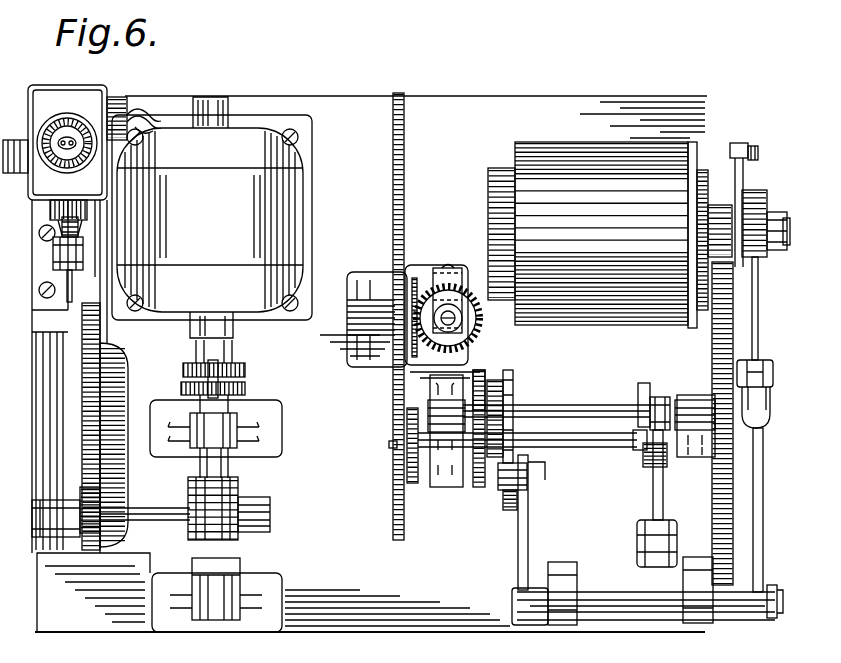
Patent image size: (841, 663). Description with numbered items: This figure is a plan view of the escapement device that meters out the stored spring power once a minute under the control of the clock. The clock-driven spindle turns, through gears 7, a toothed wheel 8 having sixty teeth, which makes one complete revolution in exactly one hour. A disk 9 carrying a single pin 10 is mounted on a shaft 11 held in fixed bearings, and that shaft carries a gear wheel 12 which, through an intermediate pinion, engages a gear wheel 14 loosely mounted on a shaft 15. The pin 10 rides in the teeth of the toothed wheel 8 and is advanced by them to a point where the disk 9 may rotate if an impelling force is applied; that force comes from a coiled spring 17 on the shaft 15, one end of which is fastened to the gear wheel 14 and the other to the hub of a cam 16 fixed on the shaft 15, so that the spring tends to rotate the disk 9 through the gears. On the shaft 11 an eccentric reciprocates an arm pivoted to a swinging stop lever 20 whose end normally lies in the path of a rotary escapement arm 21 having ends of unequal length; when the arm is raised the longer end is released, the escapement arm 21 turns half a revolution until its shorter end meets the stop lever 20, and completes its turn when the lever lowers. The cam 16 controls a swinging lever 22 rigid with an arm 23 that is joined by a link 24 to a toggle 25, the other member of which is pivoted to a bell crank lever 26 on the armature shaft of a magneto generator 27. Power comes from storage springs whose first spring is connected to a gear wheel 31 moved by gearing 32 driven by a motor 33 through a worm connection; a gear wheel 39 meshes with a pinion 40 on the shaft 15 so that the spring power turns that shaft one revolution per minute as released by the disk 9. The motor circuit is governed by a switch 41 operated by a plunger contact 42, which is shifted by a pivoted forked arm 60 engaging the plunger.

The gears 7 is at (423, 292).
The toothed wheel 8 is at (392, 405).
The disk 9 is at (413, 485).
The pin 10 is at (390, 446).
The shaft 11 is at (550, 448).
The gear wheel 12 is at (481, 490).
The gear wheel 14 is at (478, 372).
The shaft 15 is at (562, 412).
The cam 16 is at (514, 382).
The coiled spring 17 is at (496, 382).
The stop lever 20 is at (652, 473).
The escapement arm 21 is at (657, 400).
The swinging lever 22 is at (529, 530).
The arm 23 is at (763, 474).
The link 24 is at (773, 375).
The toggle 25 is at (759, 310).
The bell crank lever 26 is at (743, 175).
The magneto generator 27 is at (598, 235).
The gear wheel 31 is at (118, 470).
The gearing 32 is at (92, 383).
The motor 33 is at (212, 208).
The gear wheel 39 is at (735, 522).
The pinion 40 is at (757, 428).
The switch 41 is at (82, 143).
The plunger contact 42 is at (55, 247).
The forked arm 60 is at (68, 297).